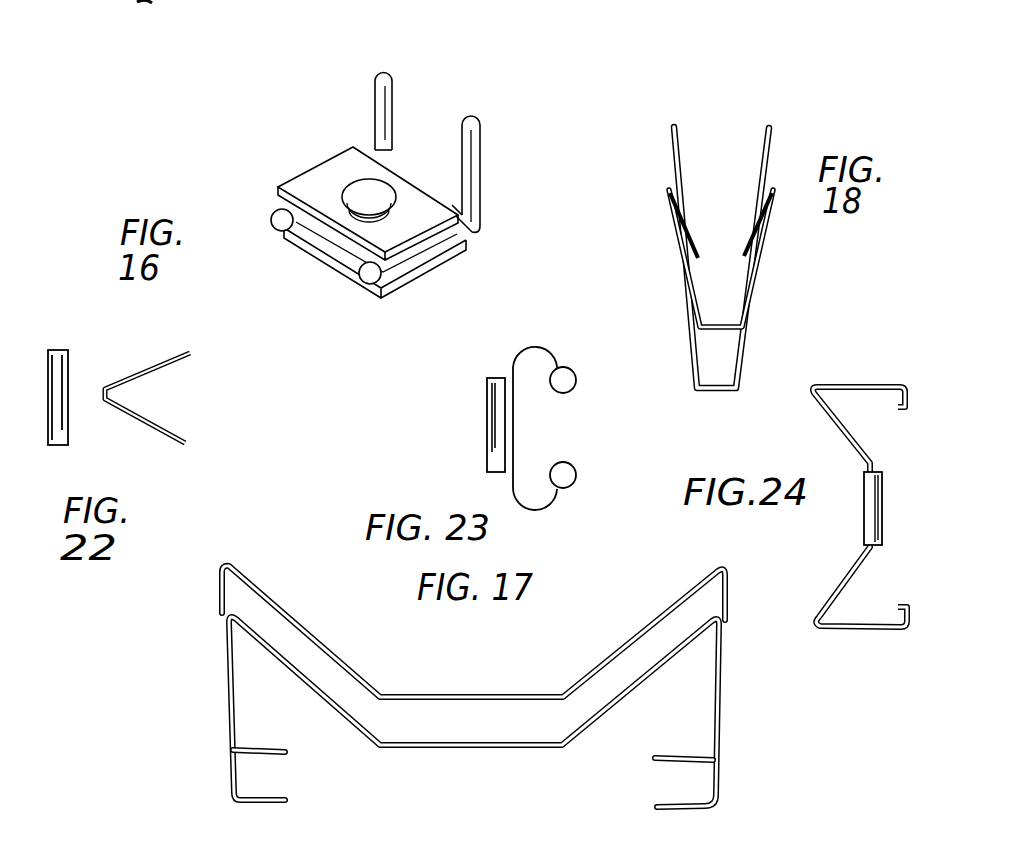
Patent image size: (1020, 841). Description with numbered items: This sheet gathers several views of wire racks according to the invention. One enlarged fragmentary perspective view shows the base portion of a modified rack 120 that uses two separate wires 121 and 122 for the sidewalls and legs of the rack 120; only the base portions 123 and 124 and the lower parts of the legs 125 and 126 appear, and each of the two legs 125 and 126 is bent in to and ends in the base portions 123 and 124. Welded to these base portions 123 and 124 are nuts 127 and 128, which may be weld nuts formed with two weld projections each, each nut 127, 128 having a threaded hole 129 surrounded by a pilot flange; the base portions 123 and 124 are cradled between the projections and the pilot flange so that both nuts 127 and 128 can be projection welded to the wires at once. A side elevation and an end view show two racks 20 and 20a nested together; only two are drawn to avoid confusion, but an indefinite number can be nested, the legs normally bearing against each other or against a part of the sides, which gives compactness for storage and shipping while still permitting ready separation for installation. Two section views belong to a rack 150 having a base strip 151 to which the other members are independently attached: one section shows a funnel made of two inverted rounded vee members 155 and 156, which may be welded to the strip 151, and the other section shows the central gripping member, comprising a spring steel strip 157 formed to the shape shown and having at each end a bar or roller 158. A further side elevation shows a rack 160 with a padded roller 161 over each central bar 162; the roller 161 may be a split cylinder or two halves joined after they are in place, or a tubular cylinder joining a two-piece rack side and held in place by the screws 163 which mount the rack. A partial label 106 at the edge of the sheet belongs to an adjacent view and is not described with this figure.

In FIG. 16, the adjacent figure element (partial) 106 is at (125, 0).
In FIG. 16, the rack 120 is at (458, 88).
In FIG. 16, the wire 121 is at (380, 83).
In FIG. 16, the wire 122 is at (480, 155).
In FIG. 16, the base portion 123 is at (278, 212).
In FIG. 16, the base portion 124 is at (387, 283).
In FIG. 16, the leg 125 is at (390, 150).
In FIG. 16, the leg 126 is at (478, 197).
In FIG. 16, the nut 127 is at (322, 168).
In FIG. 16, the nut 128 is at (335, 272).
In FIG. 16, the threaded hole 129 is at (387, 177).
In FIG. 22, the rack 150 is at (200, 440).
In FIG. 22, the base strip 151 is at (53, 350).
In FIG. 23, the base strip 151 is at (488, 410).
In FIG. 22, the inverted rounded vee member 155 is at (135, 372).
In FIG. 22, the inverted rounded vee member 156 is at (148, 418).
In FIG. 23, the spring steel strip 157 is at (513, 395).
In FIG. 23, the bar or roller 158 is at (567, 383).
In FIG. 24, the rack 160 is at (833, 374).
In FIG. 24, the padded roller 161 is at (880, 477).
In FIG. 24, the central bar 162 is at (862, 546).
In FIG. 24, the screw 163 is at (928, 403).
In FIG. 17, the wire rack 20 is at (472, 750).
In FIG. 18, the wire rack 20 is at (688, 340).
In FIG. 17, the rack 20a is at (430, 693).
In FIG. 18, the rack 20a is at (673, 163).